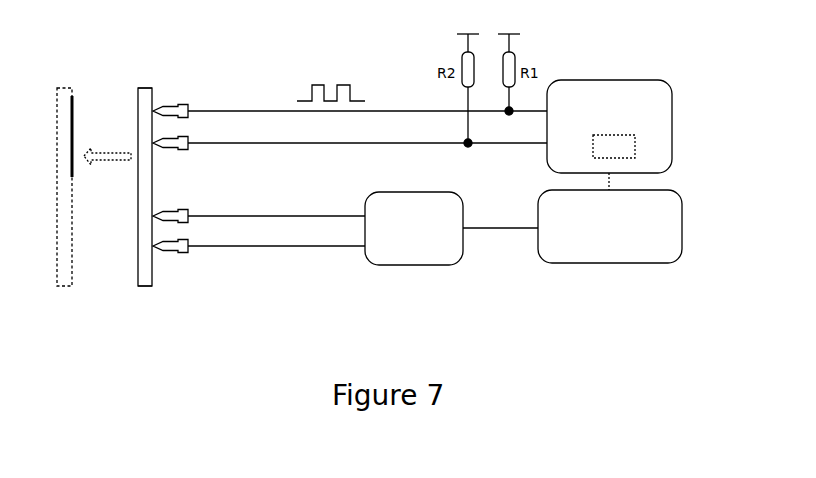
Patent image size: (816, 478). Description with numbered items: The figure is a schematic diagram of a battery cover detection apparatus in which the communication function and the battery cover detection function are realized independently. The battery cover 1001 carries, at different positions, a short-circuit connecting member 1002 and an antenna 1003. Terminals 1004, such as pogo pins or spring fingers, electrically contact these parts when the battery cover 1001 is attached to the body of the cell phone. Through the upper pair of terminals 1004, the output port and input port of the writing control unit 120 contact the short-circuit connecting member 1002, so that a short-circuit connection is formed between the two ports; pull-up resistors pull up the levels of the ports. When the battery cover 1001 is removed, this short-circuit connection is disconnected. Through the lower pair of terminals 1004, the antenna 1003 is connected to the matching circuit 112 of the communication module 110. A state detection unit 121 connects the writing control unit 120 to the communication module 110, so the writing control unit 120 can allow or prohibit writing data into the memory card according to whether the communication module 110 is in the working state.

The battery cover 1001 is at (138, 272).
The short-circuit connecting member 1002 is at (152, 96).
The antenna 1003 is at (152, 260).
The terminals 1004 is at (178, 118).
The communication module 110 is at (660, 200).
The matching circuit 112 is at (422, 207).
The writing control unit 120 is at (652, 93).
The state detection unit 121 is at (629, 135).